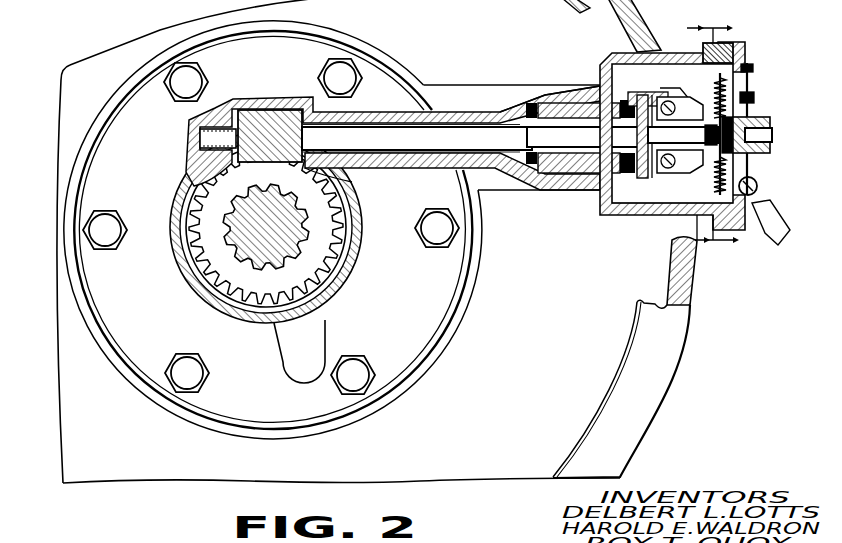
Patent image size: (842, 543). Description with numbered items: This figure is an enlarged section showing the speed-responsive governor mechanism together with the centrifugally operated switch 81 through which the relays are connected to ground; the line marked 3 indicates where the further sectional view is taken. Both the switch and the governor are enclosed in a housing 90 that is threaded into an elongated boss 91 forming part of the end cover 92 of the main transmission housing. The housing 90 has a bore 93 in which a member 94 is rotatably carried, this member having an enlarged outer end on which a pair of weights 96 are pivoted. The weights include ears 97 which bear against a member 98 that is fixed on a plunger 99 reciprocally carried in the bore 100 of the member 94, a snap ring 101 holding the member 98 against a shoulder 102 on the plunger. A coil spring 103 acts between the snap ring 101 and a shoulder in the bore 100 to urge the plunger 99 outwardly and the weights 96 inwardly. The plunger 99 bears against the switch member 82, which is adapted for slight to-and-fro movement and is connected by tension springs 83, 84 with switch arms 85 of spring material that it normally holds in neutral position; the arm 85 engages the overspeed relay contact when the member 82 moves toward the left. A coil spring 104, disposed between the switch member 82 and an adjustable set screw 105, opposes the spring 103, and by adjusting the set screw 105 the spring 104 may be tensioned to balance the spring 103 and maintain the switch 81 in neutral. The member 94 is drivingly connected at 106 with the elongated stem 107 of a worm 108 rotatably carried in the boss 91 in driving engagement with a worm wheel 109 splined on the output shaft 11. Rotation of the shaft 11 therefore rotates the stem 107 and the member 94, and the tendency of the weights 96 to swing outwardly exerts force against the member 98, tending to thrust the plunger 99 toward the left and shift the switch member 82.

The section line 3- 3 is at (717, 136).
The output shaft 11 is at (282, 231).
The centrifugally operated switch 81 is at (747, 68).
The switch member 82 is at (680, 161).
The tension spring 83 is at (735, 97).
The tension spring 84 is at (737, 168).
The switch arm 85 is at (648, 80).
The housing 90 is at (671, 50).
The elongated boss 91 is at (445, 105).
The end cover 92 is at (437, 313).
The bore 93 is at (579, 110).
The rotatable member 94 is at (580, 95).
The weights 96 is at (692, 108).
The ears 97 is at (688, 90).
The member 98 is at (656, 184).
The plunger 99 is at (583, 137).
The bore 100 is at (366, 138).
The snap ring 101 is at (634, 136).
The shoulder 102 is at (683, 135).
The coil spring 103 is at (579, 163).
The coil spring 104 is at (757, 115).
The adjustable set screw 105 is at (762, 134).
The driving connection 106 is at (519, 108).
The elongated stem 107 is at (415, 102).
The worm 108 is at (275, 127).
The worm wheel 109 is at (342, 210).